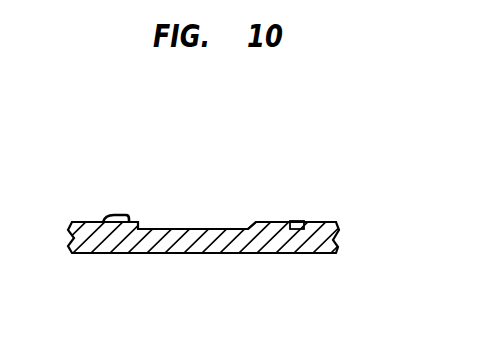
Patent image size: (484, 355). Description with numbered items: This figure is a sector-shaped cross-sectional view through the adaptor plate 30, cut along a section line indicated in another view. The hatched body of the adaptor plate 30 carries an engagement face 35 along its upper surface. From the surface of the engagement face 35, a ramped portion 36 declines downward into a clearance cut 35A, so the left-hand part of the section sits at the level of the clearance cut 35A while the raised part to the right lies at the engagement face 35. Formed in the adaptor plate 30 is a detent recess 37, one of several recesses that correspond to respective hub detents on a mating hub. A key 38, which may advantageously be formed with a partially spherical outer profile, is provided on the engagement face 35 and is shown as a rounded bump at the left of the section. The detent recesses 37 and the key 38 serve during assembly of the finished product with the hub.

The adaptor plate 30 is at (210, 298).
The engagement face 35 is at (278, 221).
The clearance cut 35A is at (184, 229).
The ramped portion 36 is at (255, 221).
The detent recess 37 is at (297, 222).
The key 38 is at (108, 217).